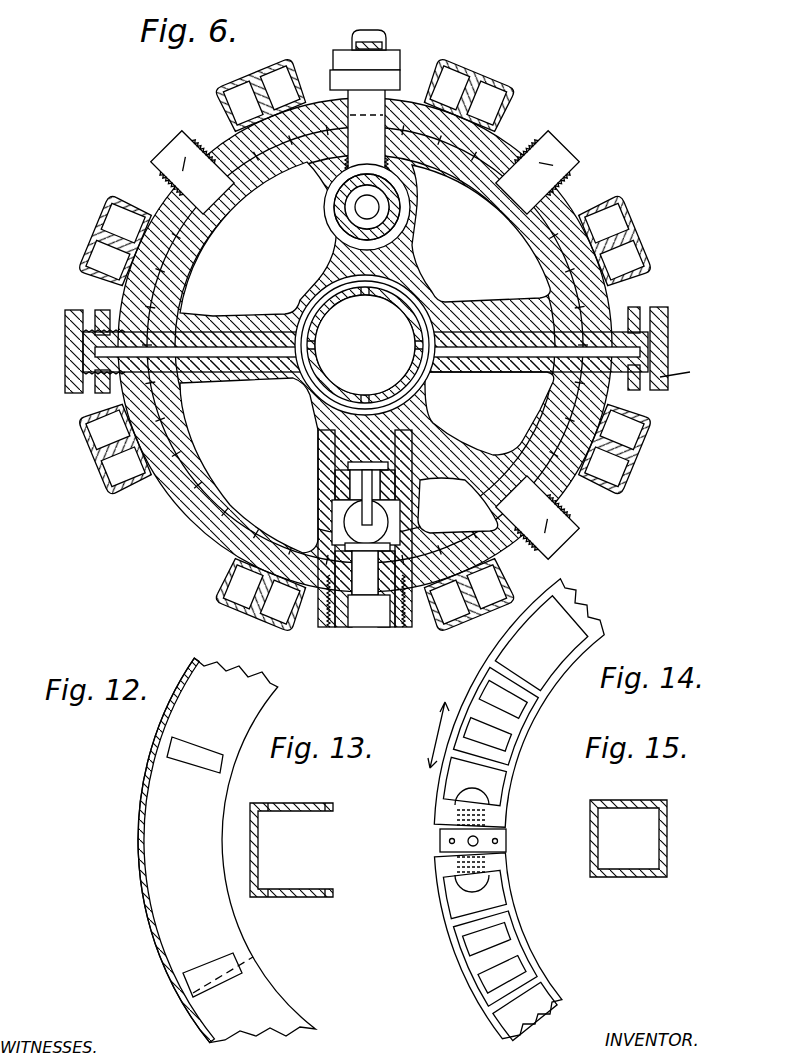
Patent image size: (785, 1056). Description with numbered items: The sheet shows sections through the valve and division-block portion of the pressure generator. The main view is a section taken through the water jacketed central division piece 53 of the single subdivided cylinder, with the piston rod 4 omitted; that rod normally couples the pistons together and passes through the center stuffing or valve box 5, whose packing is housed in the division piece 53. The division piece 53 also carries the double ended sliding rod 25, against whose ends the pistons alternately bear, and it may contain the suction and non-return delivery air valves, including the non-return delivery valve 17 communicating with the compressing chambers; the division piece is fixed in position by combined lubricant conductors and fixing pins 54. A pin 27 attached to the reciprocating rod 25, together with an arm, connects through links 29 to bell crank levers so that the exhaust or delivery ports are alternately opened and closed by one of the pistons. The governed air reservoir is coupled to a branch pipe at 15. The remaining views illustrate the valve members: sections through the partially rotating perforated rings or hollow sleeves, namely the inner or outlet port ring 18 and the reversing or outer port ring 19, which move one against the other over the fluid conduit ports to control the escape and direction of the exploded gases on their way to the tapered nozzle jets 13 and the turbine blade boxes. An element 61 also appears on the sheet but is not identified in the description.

In FIG. 6, the piston rod 4 is at (365, 345).
In FIG. 6, the center stuffing or valve box 5 is at (323, 330).
In FIG. 12, the tapered nozzle jets 13 is at (192, 987).
In FIG. 6, the branch pipe 15 is at (522, 512).
In FIG. 14, the branch pipe 15 is at (538, 945).
In FIG. 6, the non-return delivery valve 17 is at (372, 465).
In FIG. 14, the inner or outlet port ring 18 is at (515, 780).
In FIG. 15, the inner or outlet port ring 18 is at (667, 805).
In FIG. 12, the reversing or outer port ring 19 is at (226, 850).
In FIG. 13, the reversing or outer port ring 19 is at (260, 853).
In FIG. 6, the double ended sliding rod 25 is at (372, 207).
In FIG. 6, the pin 27 is at (366, 131).
In FIG. 6, the links 29 is at (386, 52).
In FIG. 6, the water jacketed central division piece 53 is at (215, 497).
In FIG. 6, the combined lubricant conductors and fixing pins 54 is at (67, 380).
In FIG. 14, the link 61 is at (506, 845).